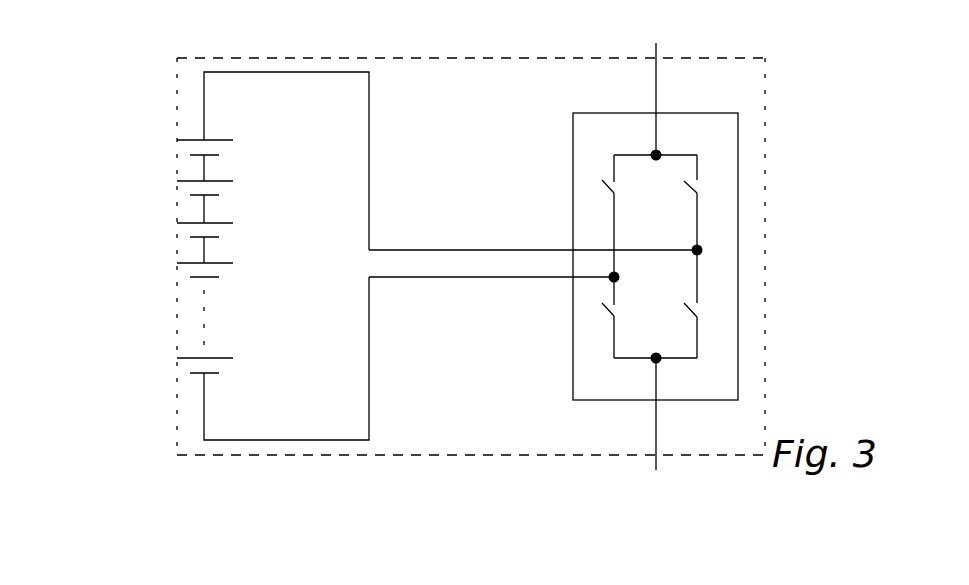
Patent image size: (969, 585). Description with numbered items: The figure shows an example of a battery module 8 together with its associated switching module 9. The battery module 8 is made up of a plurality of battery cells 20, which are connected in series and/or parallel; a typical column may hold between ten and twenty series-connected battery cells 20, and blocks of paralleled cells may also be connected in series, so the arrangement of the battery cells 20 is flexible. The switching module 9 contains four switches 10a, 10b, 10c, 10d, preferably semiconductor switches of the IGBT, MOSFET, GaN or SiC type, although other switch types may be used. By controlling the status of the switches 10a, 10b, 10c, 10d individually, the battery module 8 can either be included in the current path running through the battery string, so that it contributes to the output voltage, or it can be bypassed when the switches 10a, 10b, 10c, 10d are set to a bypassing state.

The battery module 8 is at (258, 455).
The switching module 9 is at (713, 113).
The switch 10a is at (606, 184).
The switch 10b is at (607, 306).
The switch 10c is at (697, 183).
The switch 10d is at (695, 310).
The battery cells 20 is at (177, 223).